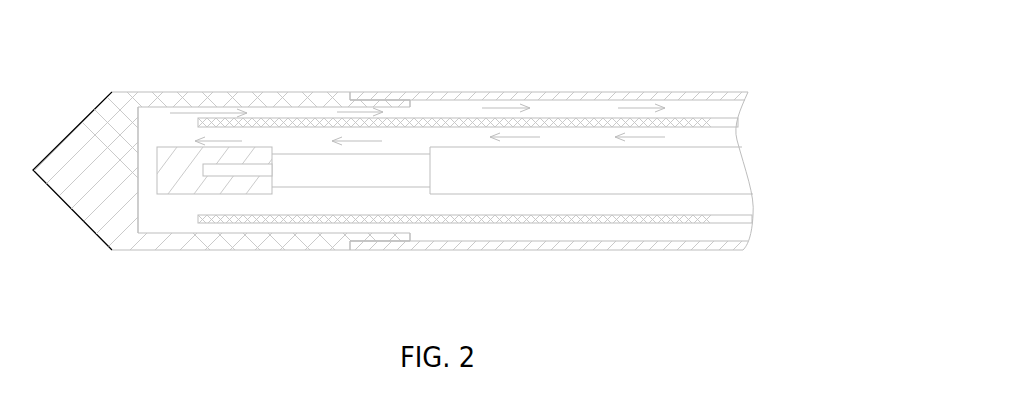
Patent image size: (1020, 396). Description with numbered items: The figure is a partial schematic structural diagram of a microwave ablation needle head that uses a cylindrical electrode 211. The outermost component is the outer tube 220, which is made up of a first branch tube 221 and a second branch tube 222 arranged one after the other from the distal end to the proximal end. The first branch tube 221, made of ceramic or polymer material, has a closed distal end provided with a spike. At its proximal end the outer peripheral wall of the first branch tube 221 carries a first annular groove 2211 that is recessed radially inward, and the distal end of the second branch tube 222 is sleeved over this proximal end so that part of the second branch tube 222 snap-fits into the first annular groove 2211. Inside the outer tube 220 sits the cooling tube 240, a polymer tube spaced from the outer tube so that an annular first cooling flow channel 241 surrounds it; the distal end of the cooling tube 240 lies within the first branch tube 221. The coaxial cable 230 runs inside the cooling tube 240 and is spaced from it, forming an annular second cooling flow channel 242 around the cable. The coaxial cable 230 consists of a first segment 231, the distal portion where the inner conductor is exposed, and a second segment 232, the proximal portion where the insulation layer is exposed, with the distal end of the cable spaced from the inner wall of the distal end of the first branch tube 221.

The outer tube 220 is at (720, 92).
The first branch tube 221 is at (220, 93).
The first annular groove 2211 is at (368, 93).
The second branch tube 222 is at (636, 92).
The cylindrical electrode 211 is at (182, 187).
The first cooling flow channel 241 is at (470, 110).
The second cooling flow channel 242 is at (582, 140).
The coaxial cable 230 is at (538, 195).
The first segment 231 is at (225, 172).
The second segment 232 is at (340, 168).
The cooling tube 240 is at (655, 223).